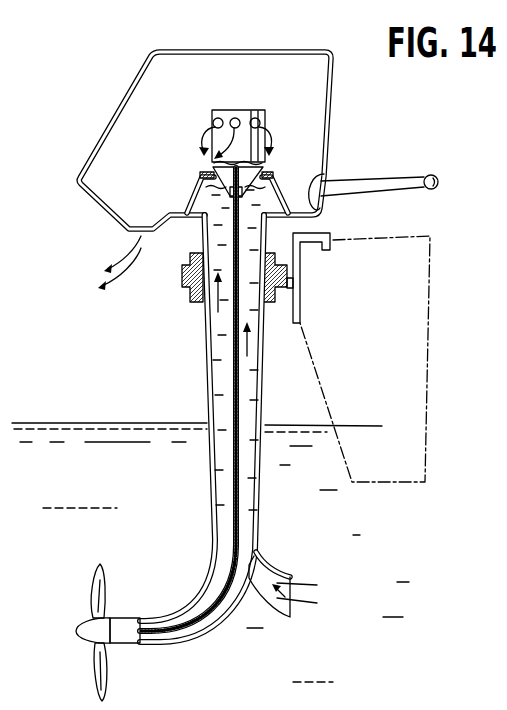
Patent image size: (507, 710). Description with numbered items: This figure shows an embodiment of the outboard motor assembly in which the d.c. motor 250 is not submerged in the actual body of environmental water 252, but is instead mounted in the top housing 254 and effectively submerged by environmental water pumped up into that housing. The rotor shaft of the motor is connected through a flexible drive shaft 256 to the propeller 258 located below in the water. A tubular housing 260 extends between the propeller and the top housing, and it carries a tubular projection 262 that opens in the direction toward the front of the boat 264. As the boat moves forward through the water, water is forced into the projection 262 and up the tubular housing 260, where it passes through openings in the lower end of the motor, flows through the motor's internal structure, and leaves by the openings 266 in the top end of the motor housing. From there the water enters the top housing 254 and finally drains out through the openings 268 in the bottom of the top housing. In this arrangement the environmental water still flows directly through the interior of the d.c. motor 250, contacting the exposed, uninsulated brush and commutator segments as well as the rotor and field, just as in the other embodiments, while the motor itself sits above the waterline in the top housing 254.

The d.c. motor 250 is at (275, 114).
The environmental water 252 is at (110, 487).
The top housing 254 is at (242, 65).
The flexible drive shaft 256 is at (232, 352).
The propeller 258 is at (111, 568).
The tubular housing 260 is at (211, 487).
The tubular projection 262 is at (279, 572).
The boat 264 is at (365, 253).
The openings 266 is at (235, 118).
The openings 268 is at (145, 232).